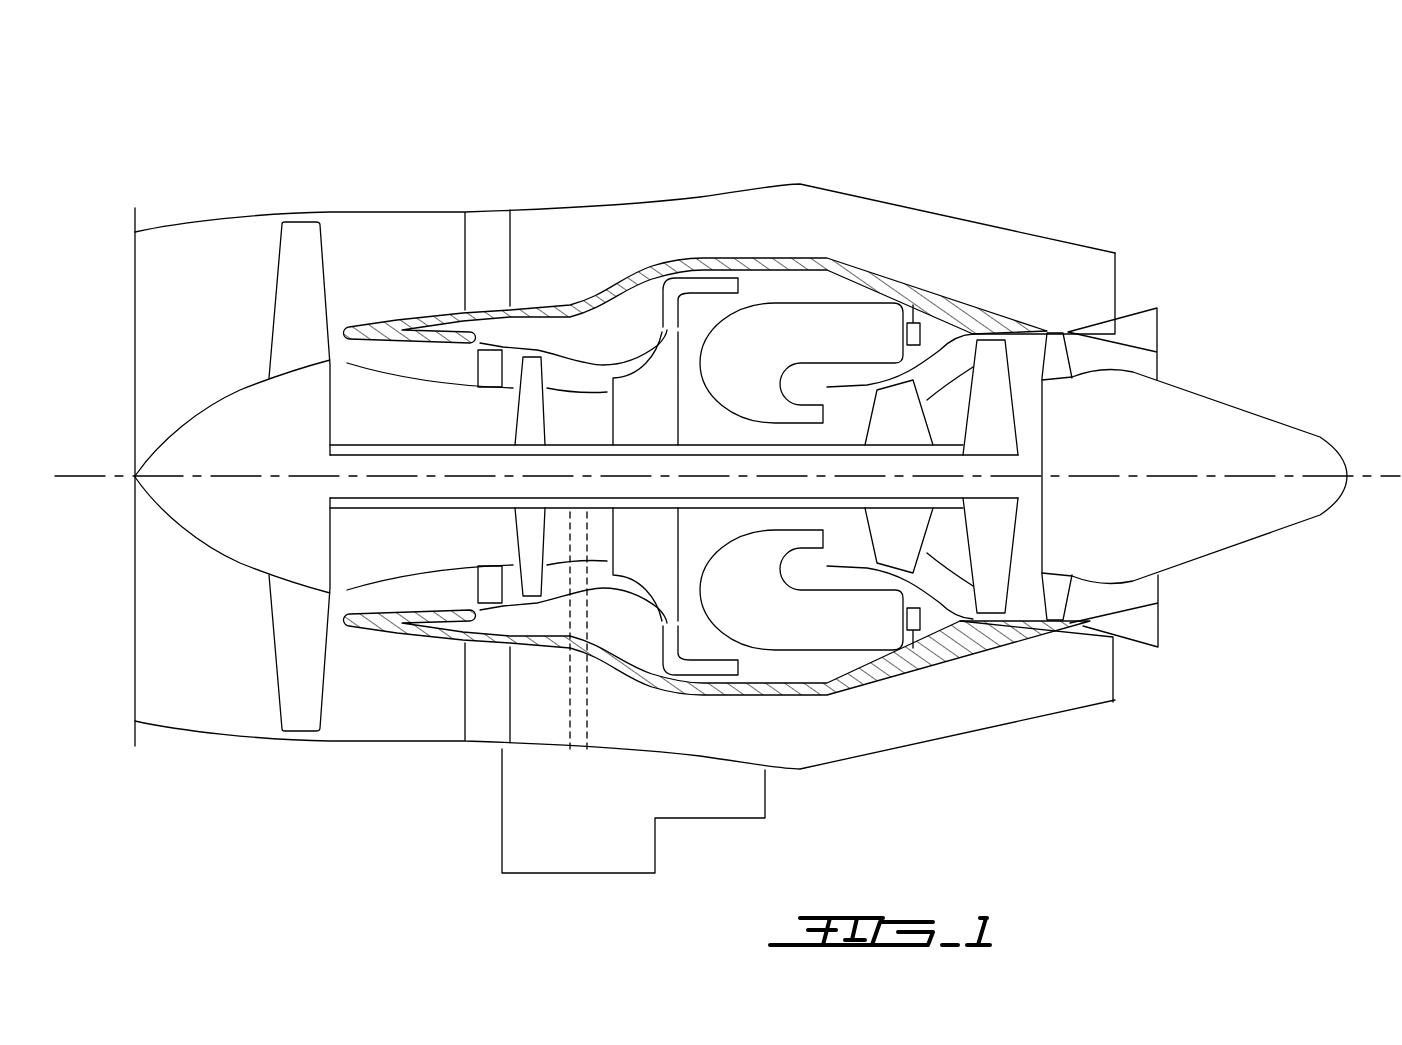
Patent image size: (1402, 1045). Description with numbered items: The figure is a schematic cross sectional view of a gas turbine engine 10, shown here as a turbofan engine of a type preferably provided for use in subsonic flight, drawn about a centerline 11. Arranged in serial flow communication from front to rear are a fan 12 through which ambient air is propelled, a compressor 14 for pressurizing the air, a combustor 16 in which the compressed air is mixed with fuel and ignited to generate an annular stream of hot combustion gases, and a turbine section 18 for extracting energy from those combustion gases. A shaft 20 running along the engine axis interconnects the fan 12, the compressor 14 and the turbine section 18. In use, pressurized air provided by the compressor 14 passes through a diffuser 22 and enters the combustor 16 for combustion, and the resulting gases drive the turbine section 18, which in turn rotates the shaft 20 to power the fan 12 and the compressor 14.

The gas turbine engine 10 is at (992, 148).
The engine centerline axis 11 is at (1387, 477).
The fan 12 is at (293, 642).
The compressor 14 is at (568, 367).
The combustor 16 is at (803, 323).
The turbine section 18 is at (947, 547).
The shaft 20 is at (413, 488).
The diffuser 22 is at (698, 287).